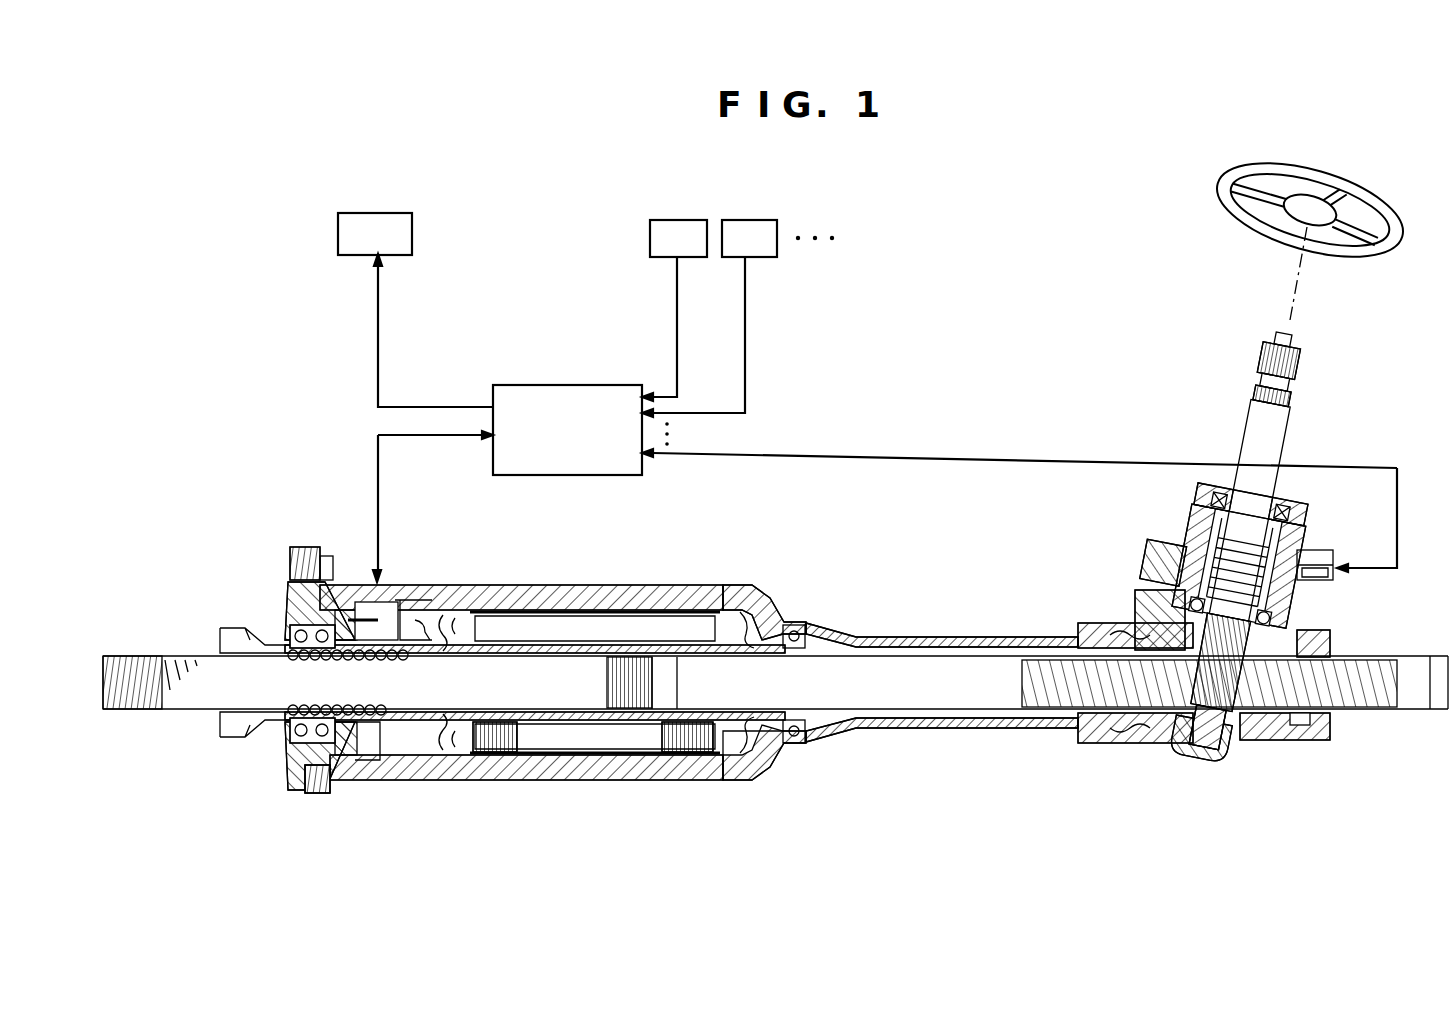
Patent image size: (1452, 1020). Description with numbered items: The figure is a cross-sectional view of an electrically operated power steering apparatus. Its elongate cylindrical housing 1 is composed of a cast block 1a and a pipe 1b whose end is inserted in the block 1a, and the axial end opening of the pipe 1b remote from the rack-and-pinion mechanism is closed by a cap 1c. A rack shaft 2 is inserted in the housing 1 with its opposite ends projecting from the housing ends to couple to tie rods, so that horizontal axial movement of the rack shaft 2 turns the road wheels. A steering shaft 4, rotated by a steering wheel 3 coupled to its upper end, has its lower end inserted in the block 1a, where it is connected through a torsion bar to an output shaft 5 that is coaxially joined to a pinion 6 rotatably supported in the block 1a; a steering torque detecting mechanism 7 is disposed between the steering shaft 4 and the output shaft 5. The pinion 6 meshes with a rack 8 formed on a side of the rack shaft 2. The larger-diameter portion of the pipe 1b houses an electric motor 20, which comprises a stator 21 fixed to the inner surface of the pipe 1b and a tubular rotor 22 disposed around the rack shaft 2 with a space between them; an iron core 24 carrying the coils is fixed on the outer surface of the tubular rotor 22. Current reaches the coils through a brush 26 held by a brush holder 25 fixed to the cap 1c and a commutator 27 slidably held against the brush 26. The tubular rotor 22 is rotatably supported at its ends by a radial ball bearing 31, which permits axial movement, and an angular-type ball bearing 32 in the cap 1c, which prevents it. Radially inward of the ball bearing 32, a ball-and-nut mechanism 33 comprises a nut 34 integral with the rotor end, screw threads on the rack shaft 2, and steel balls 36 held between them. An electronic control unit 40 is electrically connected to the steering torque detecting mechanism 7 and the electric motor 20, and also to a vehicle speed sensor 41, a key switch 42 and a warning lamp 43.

The housing 1 is at (775, 666).
The block 1a is at (1130, 622).
The pipe 1b is at (695, 587).
The cap 1c is at (272, 630).
The rack shaft 2 is at (848, 710).
The steering wheel 3 is at (1280, 165).
The steering shaft 4 is at (1268, 421).
The output shaft 5 is at (1300, 602).
The pinion 6 is at (1245, 735).
The steering torque detecting mechanism 7 is at (1295, 530).
The rack 8 is at (1183, 737).
The electric motor 20 is at (584, 755).
The stator 21 is at (581, 597).
The tubular rotor 22 is at (660, 745).
The iron core 24 is at (500, 752).
The brush holder 25 is at (345, 770).
The brush 26 is at (384, 605).
The commutator 27 is at (440, 610).
The ball bearing 31 is at (800, 625).
The ball bearing 32 is at (332, 580).
The ball-and-nut mechanism 33 is at (255, 728).
The nut 34 is at (320, 793).
The steel balls 36 is at (278, 736).
The electronic control unit 40 is at (549, 385).
The vehicle speed sensor 41 is at (742, 222).
The key switch 42 is at (675, 222).
The warning lamp 43 is at (378, 218).